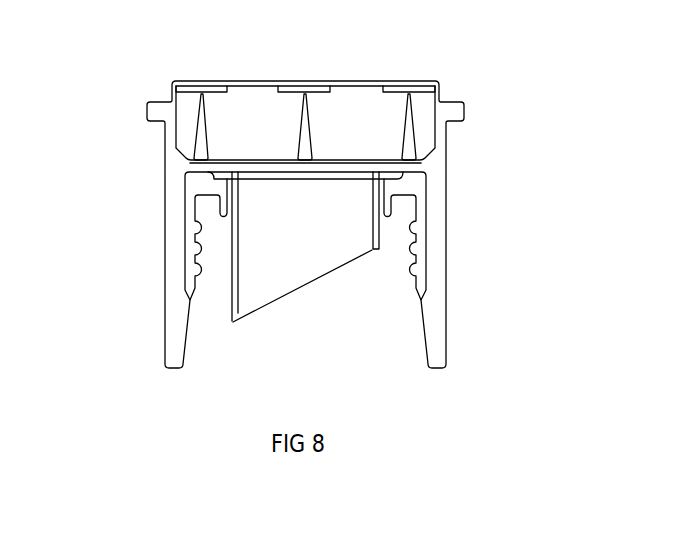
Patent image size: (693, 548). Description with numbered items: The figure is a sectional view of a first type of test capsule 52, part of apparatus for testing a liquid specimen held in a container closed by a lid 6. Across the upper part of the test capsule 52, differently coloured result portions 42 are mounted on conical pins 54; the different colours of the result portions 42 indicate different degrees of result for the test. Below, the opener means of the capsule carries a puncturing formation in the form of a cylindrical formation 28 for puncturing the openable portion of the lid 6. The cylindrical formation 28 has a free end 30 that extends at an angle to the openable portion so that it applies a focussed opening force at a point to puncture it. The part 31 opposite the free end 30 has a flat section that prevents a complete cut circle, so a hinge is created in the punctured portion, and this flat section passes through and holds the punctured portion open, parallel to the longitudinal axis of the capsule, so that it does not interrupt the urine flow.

The test capsule 52 is at (494, 71).
The lid 6 is at (417, 253).
The result portions 42 is at (292, 88).
The conical pins 54 is at (303, 147).
The cylindrical formation 28 is at (233, 322).
The free end 30 is at (247, 312).
The part opposite the free end 31 is at (370, 249).